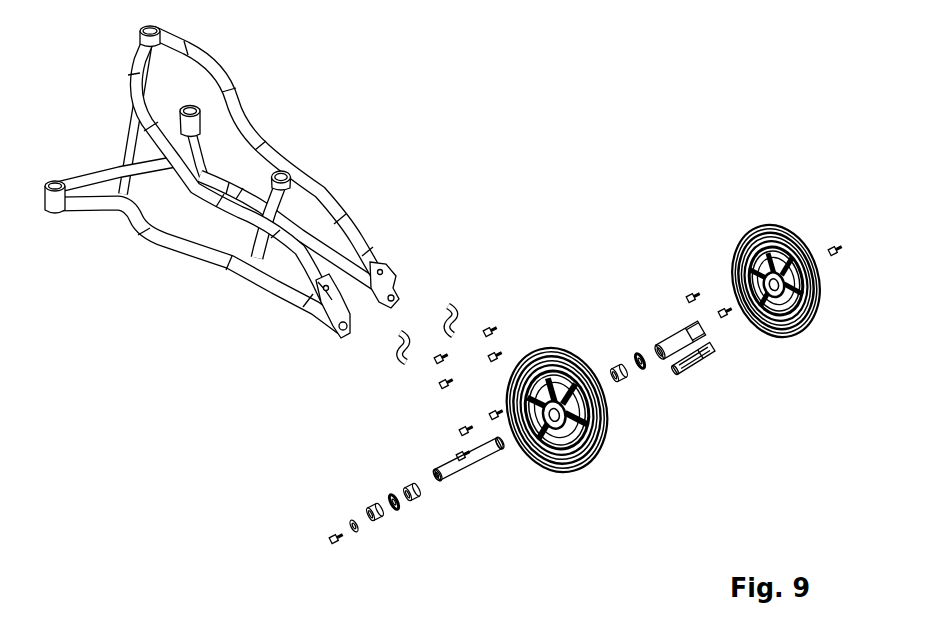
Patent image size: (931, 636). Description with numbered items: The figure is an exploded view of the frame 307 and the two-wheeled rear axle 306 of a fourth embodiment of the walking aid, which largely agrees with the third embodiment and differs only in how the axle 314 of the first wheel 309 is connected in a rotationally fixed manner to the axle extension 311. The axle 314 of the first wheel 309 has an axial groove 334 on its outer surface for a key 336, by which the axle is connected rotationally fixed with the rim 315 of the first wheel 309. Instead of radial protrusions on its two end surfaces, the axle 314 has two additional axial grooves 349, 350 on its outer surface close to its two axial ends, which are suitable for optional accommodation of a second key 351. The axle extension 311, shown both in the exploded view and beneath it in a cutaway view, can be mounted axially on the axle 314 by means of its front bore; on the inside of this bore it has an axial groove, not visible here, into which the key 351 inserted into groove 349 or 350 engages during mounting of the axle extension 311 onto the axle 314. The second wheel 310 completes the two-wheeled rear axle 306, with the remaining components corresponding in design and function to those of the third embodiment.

The two-wheeled rear axle 306 is at (591, 200).
The frame 307 is at (332, 194).
The first wheel 309 is at (603, 455).
The second wheel 310 is at (803, 335).
The axle extension 311 is at (672, 335).
The axle 314 is at (465, 455).
The rim 315 is at (573, 470).
The axial groove 334 is at (460, 456).
The key 336 is at (462, 430).
The axial groove 349 is at (500, 445).
The axial groove 350 is at (436, 476).
The second key 351 is at (497, 416).